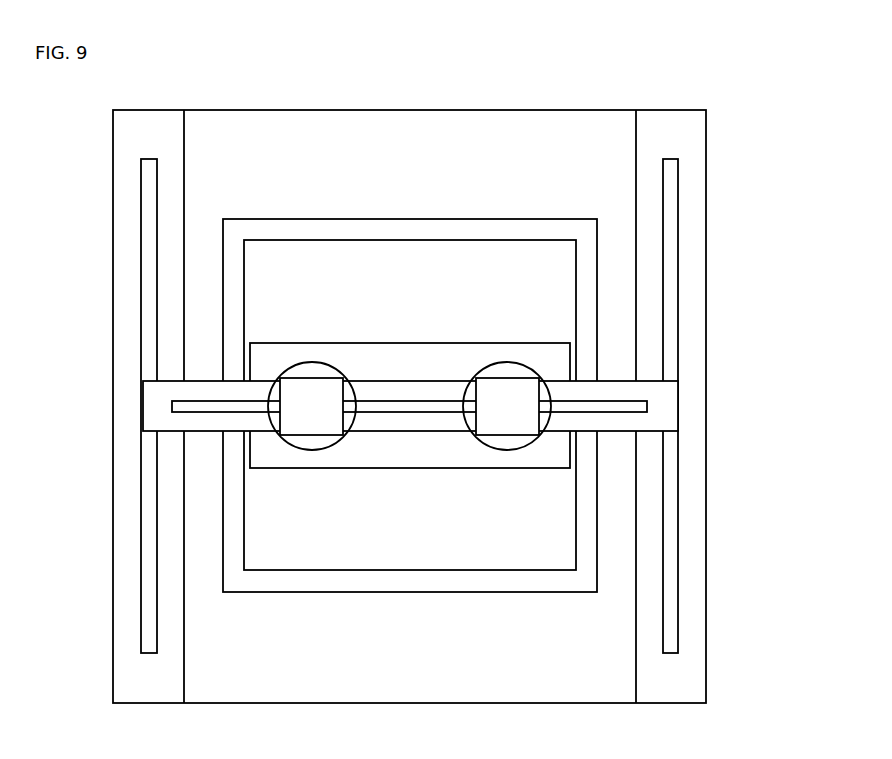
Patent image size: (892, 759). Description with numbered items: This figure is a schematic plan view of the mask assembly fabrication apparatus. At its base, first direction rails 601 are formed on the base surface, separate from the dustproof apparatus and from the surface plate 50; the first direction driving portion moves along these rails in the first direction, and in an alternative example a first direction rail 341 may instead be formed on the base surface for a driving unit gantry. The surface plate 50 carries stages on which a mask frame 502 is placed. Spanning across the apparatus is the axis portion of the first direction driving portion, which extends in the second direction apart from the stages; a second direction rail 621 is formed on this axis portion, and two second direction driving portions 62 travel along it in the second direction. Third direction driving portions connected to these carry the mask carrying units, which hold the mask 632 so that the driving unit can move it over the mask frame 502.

The first direction rail 601 is at (683, 682).
The first direction rail 341 is at (668, 263).
The surface plate 50 is at (537, 583).
The mask frame 502 is at (464, 555).
The mask 632 is at (362, 455).
The second direction driving portion 62 is at (508, 415).
The second direction rail 621 is at (210, 406).